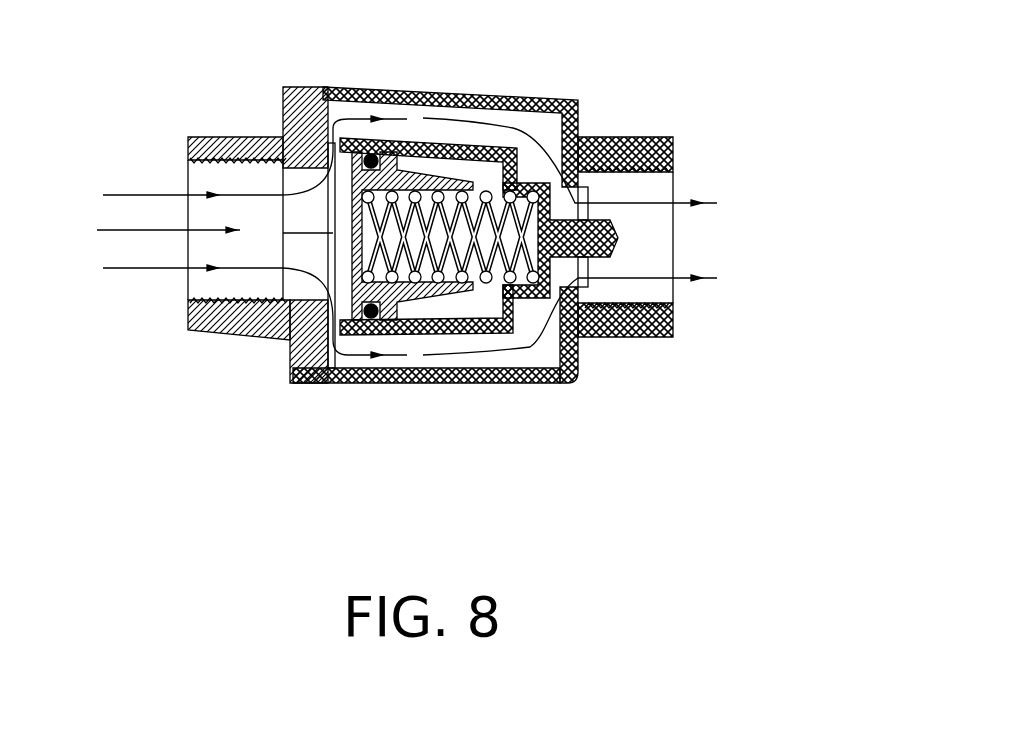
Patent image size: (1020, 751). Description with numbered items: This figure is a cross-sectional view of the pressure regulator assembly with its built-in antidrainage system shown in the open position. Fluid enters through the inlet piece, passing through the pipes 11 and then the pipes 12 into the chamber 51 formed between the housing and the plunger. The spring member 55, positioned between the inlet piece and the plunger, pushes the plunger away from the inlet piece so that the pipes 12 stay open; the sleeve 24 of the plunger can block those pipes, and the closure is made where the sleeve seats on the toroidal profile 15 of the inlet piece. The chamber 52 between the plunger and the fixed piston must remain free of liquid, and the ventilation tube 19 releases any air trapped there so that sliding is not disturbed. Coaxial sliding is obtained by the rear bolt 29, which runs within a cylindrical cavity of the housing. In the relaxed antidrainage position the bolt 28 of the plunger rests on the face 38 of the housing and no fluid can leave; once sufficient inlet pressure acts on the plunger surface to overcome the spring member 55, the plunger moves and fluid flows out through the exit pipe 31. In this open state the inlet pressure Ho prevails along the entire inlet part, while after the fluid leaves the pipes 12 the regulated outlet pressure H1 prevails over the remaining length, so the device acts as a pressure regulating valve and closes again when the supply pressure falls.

The pipes 11 is at (297, 287).
The pipes 12 is at (213, 338).
The toroidal profile 15 is at (332, 333).
The ventilation tube 19 is at (327, 310).
The sleeve 24 is at (378, 337).
The bolt 28 is at (578, 345).
The rear bolt 29 is at (610, 258).
The exit pipe 31 is at (657, 140).
The face 38 is at (623, 343).
The chamber 51 is at (458, 125).
The chamber 52 is at (490, 177).
The spring member 55 is at (480, 287).
The inlet pressure Ho is at (146, 230).
The outlet pressure H1 is at (290, 362).